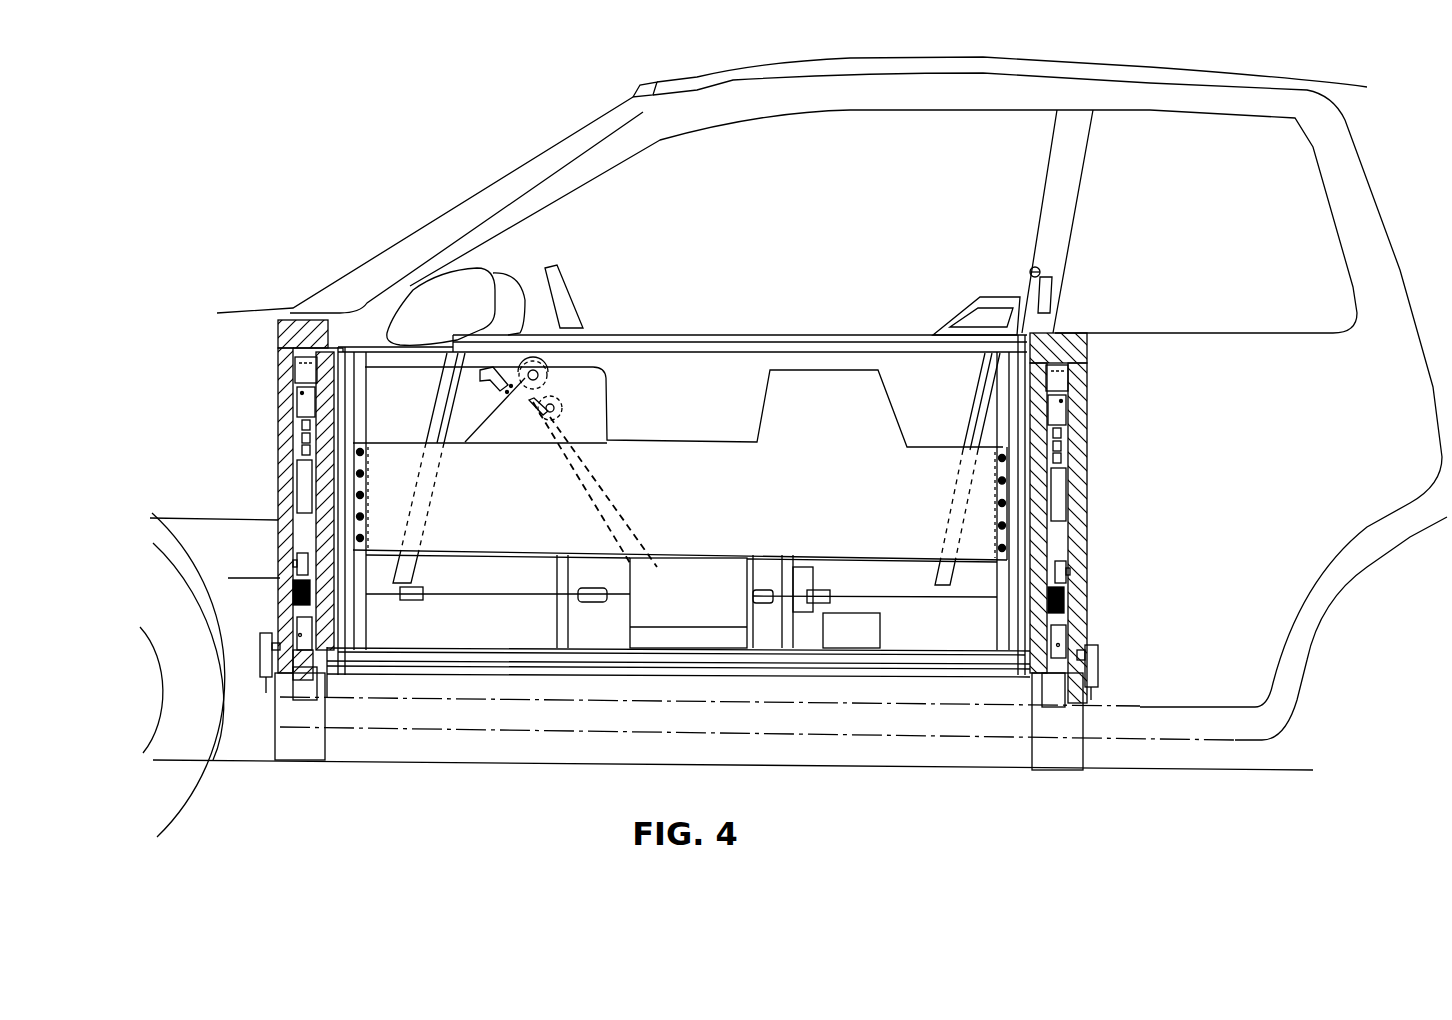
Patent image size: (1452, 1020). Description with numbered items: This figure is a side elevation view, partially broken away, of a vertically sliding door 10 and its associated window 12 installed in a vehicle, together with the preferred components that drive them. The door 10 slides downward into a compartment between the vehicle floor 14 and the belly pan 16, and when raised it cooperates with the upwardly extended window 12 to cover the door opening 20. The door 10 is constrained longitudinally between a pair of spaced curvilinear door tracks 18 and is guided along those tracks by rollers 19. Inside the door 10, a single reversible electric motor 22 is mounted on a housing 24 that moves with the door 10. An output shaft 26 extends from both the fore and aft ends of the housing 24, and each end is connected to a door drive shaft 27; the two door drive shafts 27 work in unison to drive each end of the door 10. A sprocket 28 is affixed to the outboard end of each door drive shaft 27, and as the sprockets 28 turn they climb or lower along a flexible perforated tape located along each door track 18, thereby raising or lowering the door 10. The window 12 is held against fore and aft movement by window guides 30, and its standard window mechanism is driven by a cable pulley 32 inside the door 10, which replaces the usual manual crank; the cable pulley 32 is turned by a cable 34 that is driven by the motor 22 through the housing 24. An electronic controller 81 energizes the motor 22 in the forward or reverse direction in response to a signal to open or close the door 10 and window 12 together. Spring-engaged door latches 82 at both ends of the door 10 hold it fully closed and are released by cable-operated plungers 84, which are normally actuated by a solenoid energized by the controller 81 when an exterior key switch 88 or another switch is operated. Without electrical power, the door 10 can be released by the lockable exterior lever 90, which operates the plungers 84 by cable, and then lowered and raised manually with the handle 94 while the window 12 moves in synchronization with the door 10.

The vertically moving door 10 is at (323, 680).
The window 12 is at (695, 338).
The vehicle floor 14 is at (957, 710).
The belly pan 16 is at (833, 768).
The door track 18 is at (302, 683).
The roller 19 is at (302, 448).
The door opening 20 is at (797, 303).
The reversible electric motor 22 is at (807, 575).
The housing 24 is at (672, 604).
The output shaft 26 is at (620, 598).
The door drive shaft 27 is at (478, 595).
The sprocket 28 is at (297, 600).
The window guide 30 is at (463, 442).
The cable pulley 32 is at (562, 400).
The cable 34 is at (618, 496).
The electronic controller 81 is at (839, 642).
The door latch 82 is at (327, 653).
The plunger 84 is at (258, 656).
The exterior key switch 88 is at (1028, 268).
The exterior lever 90 is at (1047, 295).
The handle 94 is at (952, 313).